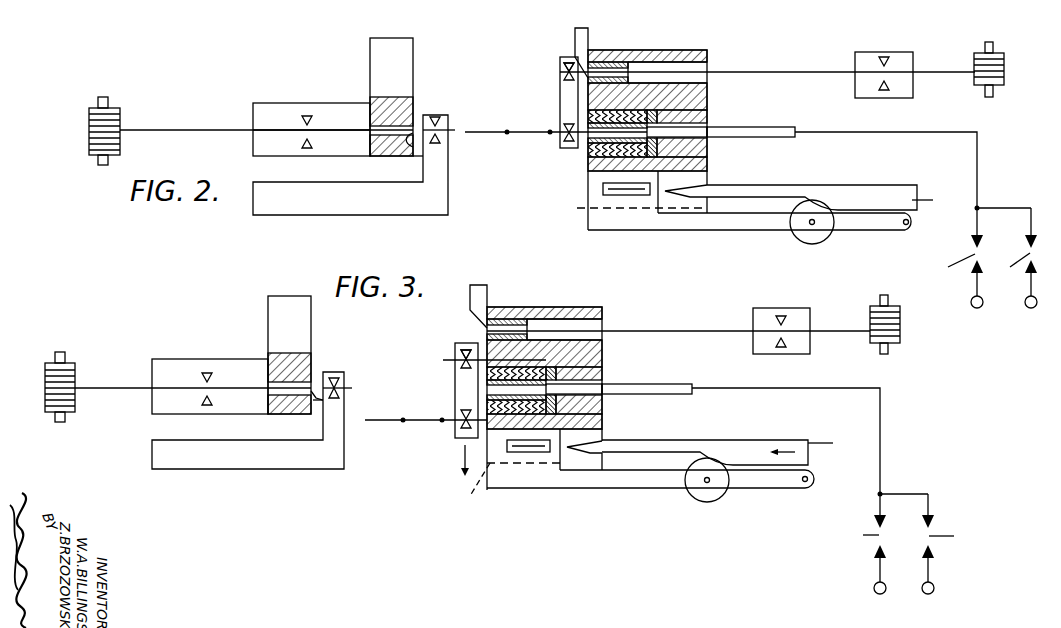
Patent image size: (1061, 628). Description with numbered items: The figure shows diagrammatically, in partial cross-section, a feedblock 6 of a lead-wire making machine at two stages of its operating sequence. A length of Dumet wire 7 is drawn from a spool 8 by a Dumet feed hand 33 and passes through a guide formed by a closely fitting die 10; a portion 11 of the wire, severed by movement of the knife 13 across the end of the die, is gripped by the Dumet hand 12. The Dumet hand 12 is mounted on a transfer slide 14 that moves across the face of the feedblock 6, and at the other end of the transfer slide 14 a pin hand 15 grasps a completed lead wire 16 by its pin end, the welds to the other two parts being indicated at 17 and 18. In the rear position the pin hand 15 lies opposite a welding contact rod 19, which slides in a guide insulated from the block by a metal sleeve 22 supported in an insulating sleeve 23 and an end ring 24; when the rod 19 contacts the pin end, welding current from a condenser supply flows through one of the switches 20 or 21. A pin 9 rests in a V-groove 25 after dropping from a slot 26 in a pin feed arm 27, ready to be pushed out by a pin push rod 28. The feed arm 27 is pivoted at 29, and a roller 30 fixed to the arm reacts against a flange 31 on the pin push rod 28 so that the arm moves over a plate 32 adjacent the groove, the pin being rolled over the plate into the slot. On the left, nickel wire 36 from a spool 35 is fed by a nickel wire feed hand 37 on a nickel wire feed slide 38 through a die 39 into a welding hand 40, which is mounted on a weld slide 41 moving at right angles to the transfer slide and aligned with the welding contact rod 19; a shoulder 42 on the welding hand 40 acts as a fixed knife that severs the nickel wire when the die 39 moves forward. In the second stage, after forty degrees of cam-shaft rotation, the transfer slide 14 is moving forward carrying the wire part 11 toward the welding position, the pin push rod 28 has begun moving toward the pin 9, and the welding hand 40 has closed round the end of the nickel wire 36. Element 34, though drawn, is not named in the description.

In FIG. 2, the feedblock 6 is at (672, 52).
In FIG. 3, the feedblock 6 is at (558, 308).
In FIG. 2, the Dumet wire 7 is at (722, 72).
In FIG. 3, the Dumet wire 7 is at (640, 331).
In FIG. 2, the spool 8 is at (997, 60).
In FIG. 3, the spool 8 is at (892, 316).
In FIG. 2, the pin 9 is at (631, 192).
In FIG. 3, the pin 9 is at (530, 449).
In FIG. 2, the die 10 is at (618, 62).
In FIG. 3, the die 10 is at (498, 318).
In FIG. 2, the portion of the wire 11 is at (560, 72).
In FIG. 3, the portion of the wire 11 is at (460, 360).
In FIG. 2, the Dumet hand 12 is at (562, 66).
In FIG. 3, the Dumet hand 12 is at (463, 353).
In FIG. 2, the knife 13 is at (585, 40).
In FIG. 3, the knife 13 is at (477, 305).
In FIG. 2, the transfer slide 14 is at (565, 93).
In FIG. 3, the transfer slide 14 is at (468, 383).
In FIG. 2, the pin hand 15 is at (567, 130).
In FIG. 3, the pin hand 15 is at (462, 430).
In FIG. 2, the completed lead wire 16 is at (533, 133).
In FIG. 3, the completed lead wire 16 is at (427, 421).
In FIG. 2, the weld 17 is at (507, 133).
In FIG. 3, the weld 17 is at (403, 421).
In FIG. 2, the weld 18 is at (548, 130).
In FIG. 3, the weld 18 is at (442, 422).
In FIG. 2, the welding contact rod 19 is at (747, 130).
In FIG. 3, the welding contact rod 19 is at (653, 388).
In FIG. 2, the switch 20 is at (957, 258).
In FIG. 3, the switch 20 is at (859, 544).
In FIG. 2, the switch 21 is at (1015, 258).
In FIG. 3, the switch 21 is at (952, 544).
In FIG. 2, the metal sleeve 22 is at (588, 147).
In FIG. 2, the sleeve 23 is at (658, 115).
In FIG. 3, the sleeve 23 is at (556, 368).
In FIG. 2, the end ring 24 is at (677, 126).
In FIG. 3, the end ring 24 is at (577, 381).
In FIG. 2, the V-groove 25 is at (680, 189).
In FIG. 3, the V-groove 25 is at (570, 441).
In FIG. 2, the slot 26 is at (643, 196).
In FIG. 3, the slot 26 is at (537, 454).
In FIG. 2, the pin feed arm 27 is at (770, 218).
In FIG. 3, the pin feed arm 27 is at (605, 483).
In FIG. 2, the pin push rod 28 is at (837, 195).
In FIG. 3, the pin push rod 28 is at (702, 448).
In FIG. 2, the pivot 29 is at (908, 226).
In FIG. 3, the pivot 29 is at (802, 484).
In FIG. 2, the roller 30 is at (820, 237).
In FIG. 3, the roller 30 is at (695, 494).
In FIG. 2, the flange 31 is at (936, 203).
In FIG. 3, the flange 31 is at (834, 446).
In FIG. 2, the plate 32 is at (627, 205).
In FIG. 3, the plate 32 is at (508, 493).
In FIG. 2, the Dumet feed hand 33 is at (885, 83).
In FIG. 3, the Dumet feed hand 33 is at (782, 340).
In FIG. 2, the box 34 is at (868, 51).
In FIG. 3, the box 34 is at (765, 308).
In FIG. 2, the spool 35 is at (115, 109).
In FIG. 2, the nickel wire 36 is at (355, 130).
In FIG. 3, the nickel wire 36 is at (235, 392).
In FIG. 2, the nickel wire feed hand 37 is at (305, 139).
In FIG. 2, the nickel wire feed slide 38 is at (265, 112).
In FIG. 2, the die 39 is at (383, 97).
In FIG. 3, the die 39 is at (292, 353).
In FIG. 2, the welding hand 40 is at (436, 140).
In FIG. 3, the welding hand 40 is at (333, 395).
In FIG. 2, the weld slide 41 is at (342, 202).
In FIG. 3, the weld slide 41 is at (255, 458).
In FIG. 2, the shoulder 42 is at (413, 145).
In FIG. 3, the shoulder 42 is at (313, 402).